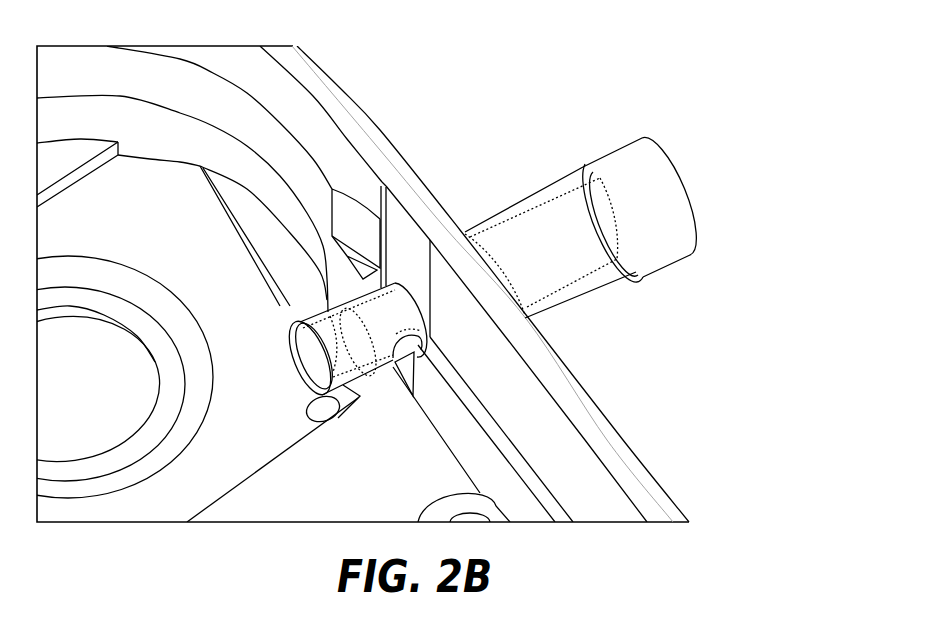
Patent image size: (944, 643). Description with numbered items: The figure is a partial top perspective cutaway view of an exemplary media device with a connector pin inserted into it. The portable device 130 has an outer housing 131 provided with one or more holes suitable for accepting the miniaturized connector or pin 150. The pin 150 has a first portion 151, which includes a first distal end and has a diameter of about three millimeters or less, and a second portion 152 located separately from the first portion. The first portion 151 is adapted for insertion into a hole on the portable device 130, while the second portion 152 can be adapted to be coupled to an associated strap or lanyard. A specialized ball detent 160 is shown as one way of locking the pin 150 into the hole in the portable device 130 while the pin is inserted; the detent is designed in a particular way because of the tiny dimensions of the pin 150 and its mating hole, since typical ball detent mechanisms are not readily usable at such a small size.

The portable device 130 is at (712, 447).
The outer housing 131 is at (215, 282).
The pin 150 is at (550, 185).
The first portion 151 is at (294, 362).
The second portion 152 is at (673, 192).
The ball detent 160 is at (393, 378).